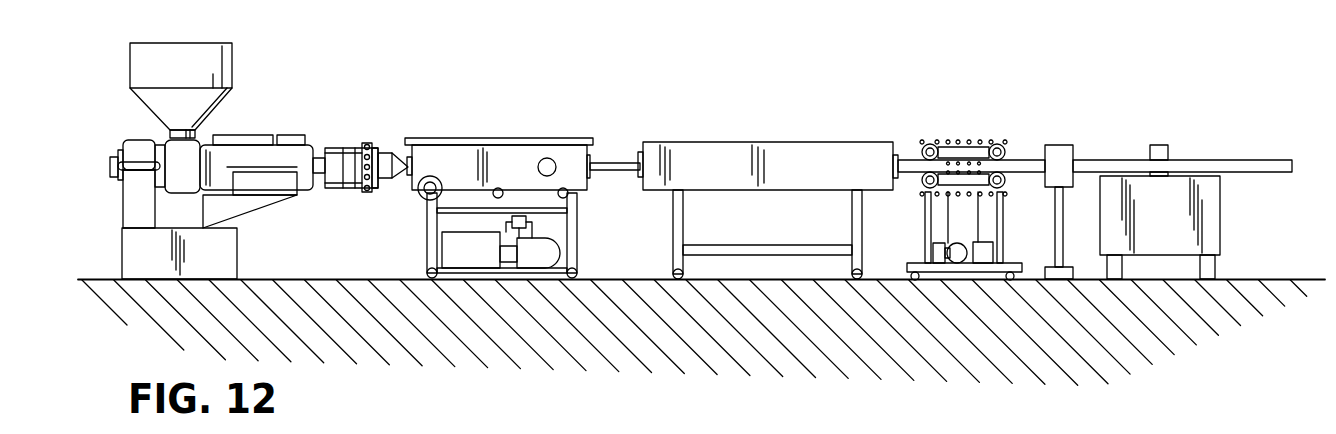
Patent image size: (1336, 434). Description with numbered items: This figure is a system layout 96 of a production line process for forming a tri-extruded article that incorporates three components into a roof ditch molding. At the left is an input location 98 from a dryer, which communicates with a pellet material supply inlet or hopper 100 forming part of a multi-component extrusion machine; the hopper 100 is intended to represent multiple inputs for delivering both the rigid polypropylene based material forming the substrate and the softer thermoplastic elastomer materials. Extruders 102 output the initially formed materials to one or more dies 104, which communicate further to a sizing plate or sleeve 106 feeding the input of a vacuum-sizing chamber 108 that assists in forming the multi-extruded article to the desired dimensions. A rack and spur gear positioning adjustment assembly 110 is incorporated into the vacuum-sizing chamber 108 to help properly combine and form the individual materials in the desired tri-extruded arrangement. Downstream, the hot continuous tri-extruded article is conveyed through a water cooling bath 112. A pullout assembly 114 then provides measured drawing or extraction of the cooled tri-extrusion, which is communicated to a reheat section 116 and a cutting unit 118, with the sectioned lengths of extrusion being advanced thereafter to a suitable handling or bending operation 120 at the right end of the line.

The system layout 96 is at (528, 103).
The input location 98 is at (150, 107).
The hopper 100 is at (173, 58).
The extruders 102 is at (253, 158).
The dies 104 is at (348, 160).
The sizing plate or sleeve 106 is at (390, 155).
The vacuum-sizing chamber 108 is at (470, 143).
The rack and spur gear positioning adjustment assembly 110 is at (418, 198).
The water cooling bath 112 is at (705, 157).
The pullout assembly 114 is at (962, 150).
The reheat section 116 is at (1053, 158).
The cutting unit 118 is at (1157, 155).
The handling or bending operation 120 is at (1260, 173).